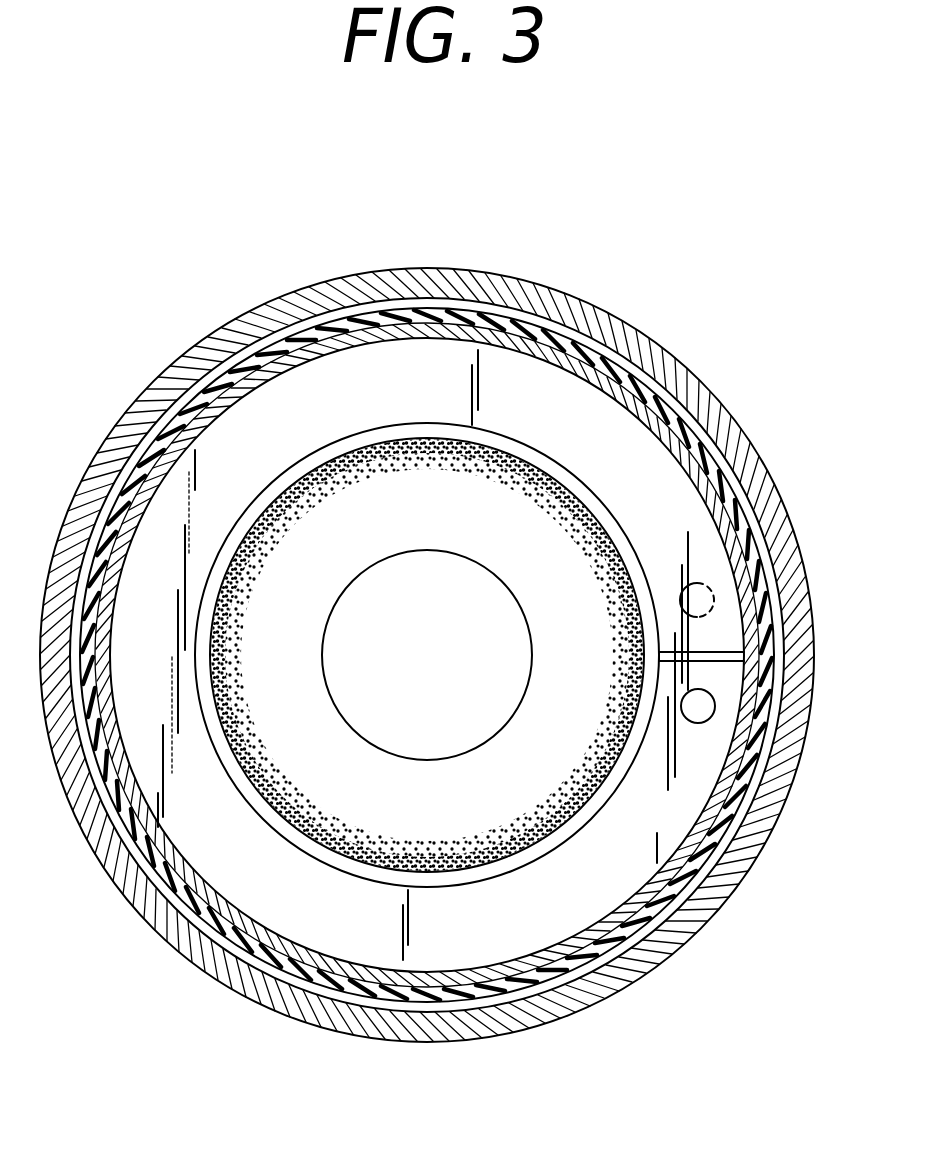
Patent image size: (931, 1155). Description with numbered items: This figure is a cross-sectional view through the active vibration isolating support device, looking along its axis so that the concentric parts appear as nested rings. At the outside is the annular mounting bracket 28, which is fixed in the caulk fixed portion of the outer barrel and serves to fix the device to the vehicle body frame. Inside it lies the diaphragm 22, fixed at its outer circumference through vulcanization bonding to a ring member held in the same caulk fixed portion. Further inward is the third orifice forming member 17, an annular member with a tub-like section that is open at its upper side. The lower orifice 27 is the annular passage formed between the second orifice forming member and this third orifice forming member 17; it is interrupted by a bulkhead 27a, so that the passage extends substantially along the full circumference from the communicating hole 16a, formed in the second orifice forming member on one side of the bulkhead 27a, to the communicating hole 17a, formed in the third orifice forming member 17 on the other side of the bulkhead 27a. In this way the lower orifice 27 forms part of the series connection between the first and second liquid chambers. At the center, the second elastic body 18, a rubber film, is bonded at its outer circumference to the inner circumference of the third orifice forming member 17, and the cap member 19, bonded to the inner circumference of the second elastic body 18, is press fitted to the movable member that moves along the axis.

The mounting bracket 28 is at (638, 332).
The diaphragm 22 is at (268, 358).
The lower orifice 27 is at (392, 412).
The third orifice forming member 17 is at (425, 437).
The second elastic body 18 is at (338, 782).
The cap member 19 is at (448, 682).
The bulkhead 27a is at (658, 666).
The communicating hole 16a is at (682, 592).
The communicating hole 17a is at (665, 748).